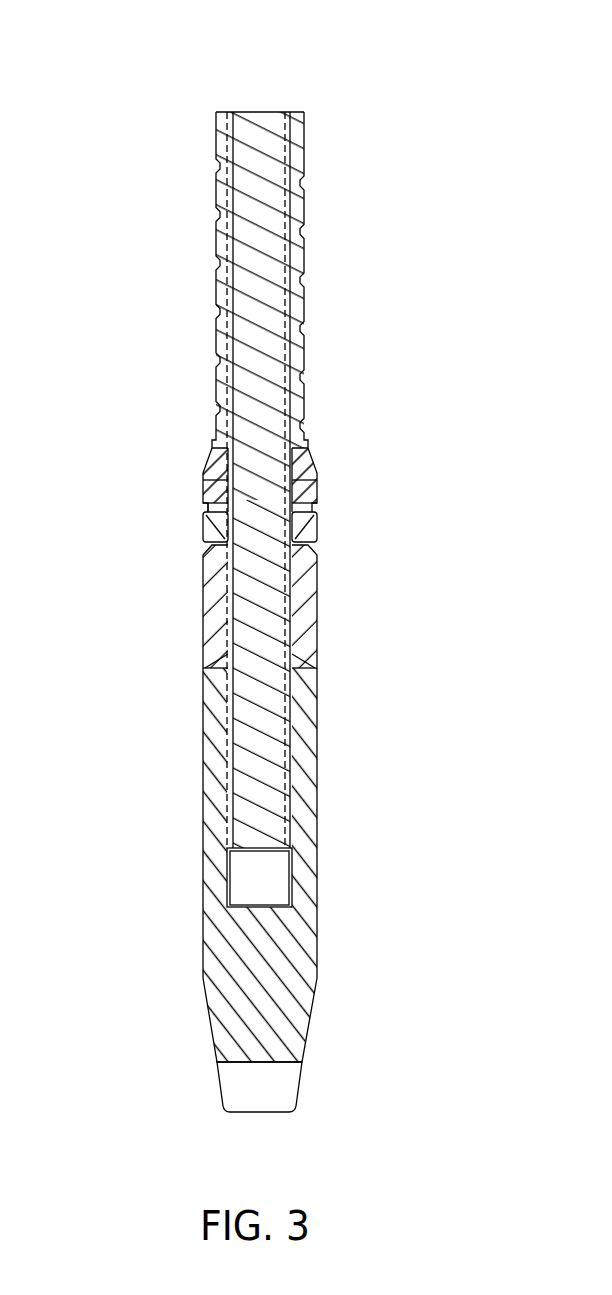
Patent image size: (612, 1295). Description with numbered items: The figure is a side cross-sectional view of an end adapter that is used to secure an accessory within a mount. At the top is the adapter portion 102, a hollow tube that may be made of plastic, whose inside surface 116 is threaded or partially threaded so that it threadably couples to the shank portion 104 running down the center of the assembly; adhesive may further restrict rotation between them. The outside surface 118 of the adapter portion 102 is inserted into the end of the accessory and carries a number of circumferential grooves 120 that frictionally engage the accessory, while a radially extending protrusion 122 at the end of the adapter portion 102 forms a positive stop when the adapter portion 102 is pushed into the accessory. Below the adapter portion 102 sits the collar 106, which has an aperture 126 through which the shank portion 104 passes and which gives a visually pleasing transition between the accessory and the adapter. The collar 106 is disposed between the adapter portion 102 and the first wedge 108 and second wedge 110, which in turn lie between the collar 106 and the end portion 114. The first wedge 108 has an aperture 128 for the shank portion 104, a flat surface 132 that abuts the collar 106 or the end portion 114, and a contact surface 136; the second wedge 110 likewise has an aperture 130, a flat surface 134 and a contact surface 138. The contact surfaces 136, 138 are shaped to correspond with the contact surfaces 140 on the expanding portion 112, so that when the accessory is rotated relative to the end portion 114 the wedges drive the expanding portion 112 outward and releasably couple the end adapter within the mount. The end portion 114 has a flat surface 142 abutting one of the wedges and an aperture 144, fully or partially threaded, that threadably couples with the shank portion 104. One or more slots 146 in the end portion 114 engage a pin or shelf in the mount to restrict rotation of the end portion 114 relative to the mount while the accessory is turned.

The adapter portion 102 is at (300, 113).
The shank portion 104 is at (255, 150).
The collar 106 is at (312, 458).
The first wedge 108 is at (205, 507).
The second wedge 110 is at (208, 595).
The expanding portion 112 is at (202, 522).
The end portion 114 is at (205, 825).
The inside surface 116 is at (228, 272).
The outside surface 118 is at (308, 188).
The circumferential grooves 120 is at (217, 340).
The radially extending protrusion 122 is at (211, 448).
The aperture 126 is at (314, 470).
The aperture 128 is at (204, 505).
The aperture 130 is at (289, 575).
The flat surface 132 is at (305, 438).
The flat surface 134 is at (298, 668).
The contact surface 136 is at (315, 503).
The contact surface 138 is at (312, 552).
The contact surfaces 140 is at (316, 527).
The flat surface 142 is at (210, 668).
The aperture 144 is at (290, 882).
The slots 146 is at (265, 1075).